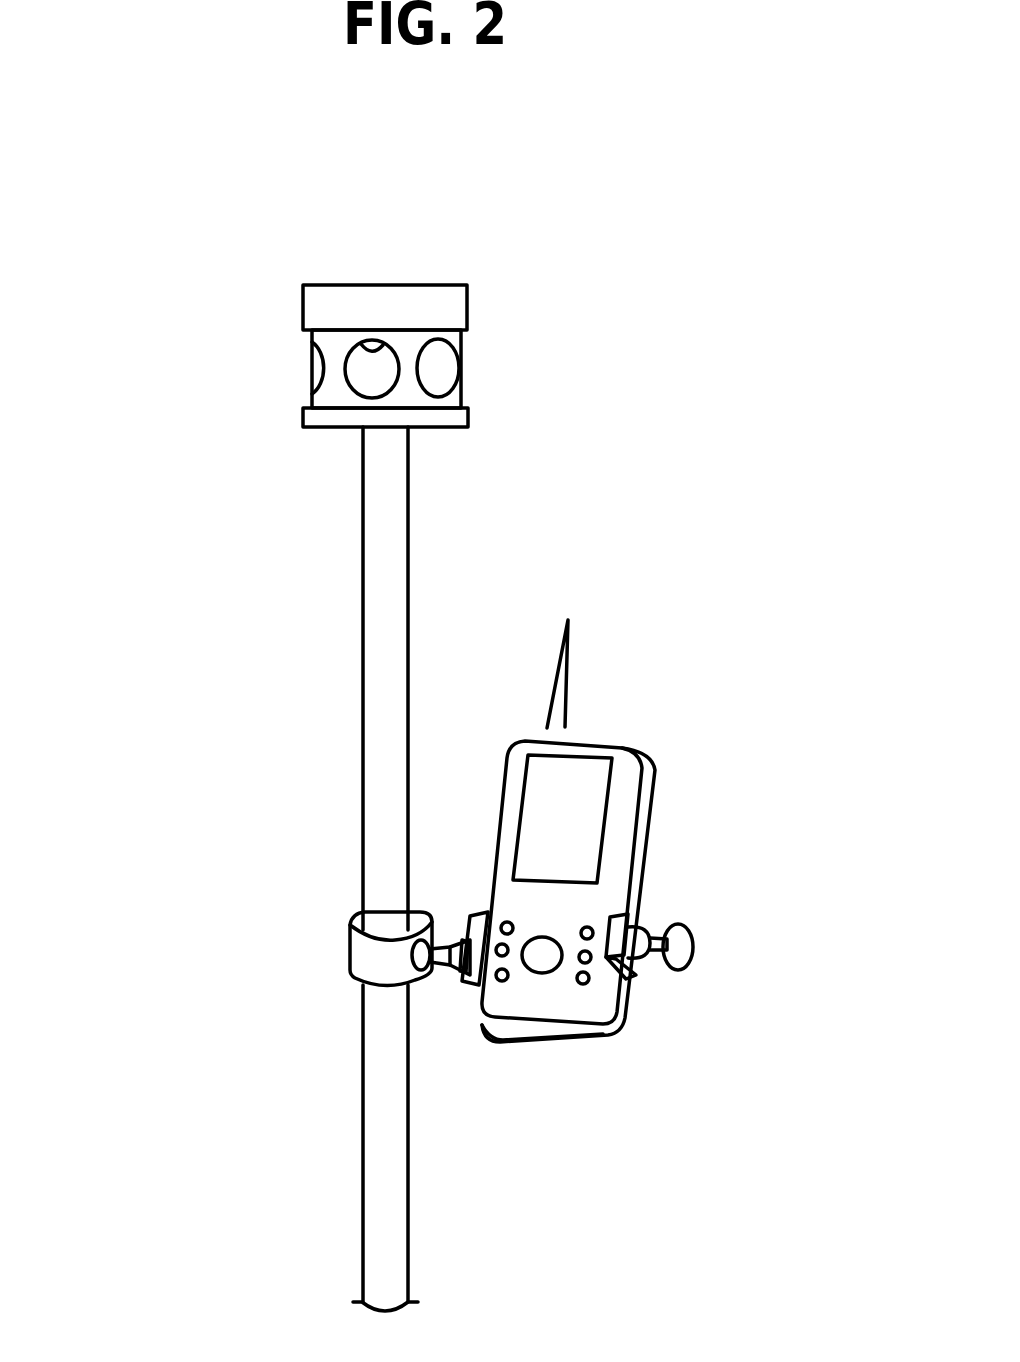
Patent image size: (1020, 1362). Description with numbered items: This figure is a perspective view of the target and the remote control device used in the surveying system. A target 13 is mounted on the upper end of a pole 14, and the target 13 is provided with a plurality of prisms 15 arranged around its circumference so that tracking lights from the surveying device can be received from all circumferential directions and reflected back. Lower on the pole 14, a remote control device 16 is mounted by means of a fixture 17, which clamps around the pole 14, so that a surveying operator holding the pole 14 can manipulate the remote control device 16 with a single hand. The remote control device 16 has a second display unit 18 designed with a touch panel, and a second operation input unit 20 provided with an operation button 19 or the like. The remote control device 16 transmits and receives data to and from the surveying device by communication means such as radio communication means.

The target 13 is at (466, 341).
The pole 14 is at (363, 736).
The prism 15 is at (383, 345).
The remote control device 16 is at (655, 797).
The fixture 17 is at (353, 970).
The second display unit 18 is at (548, 795).
The operation button 19 is at (538, 968).
The second operation input unit 20 is at (552, 990).